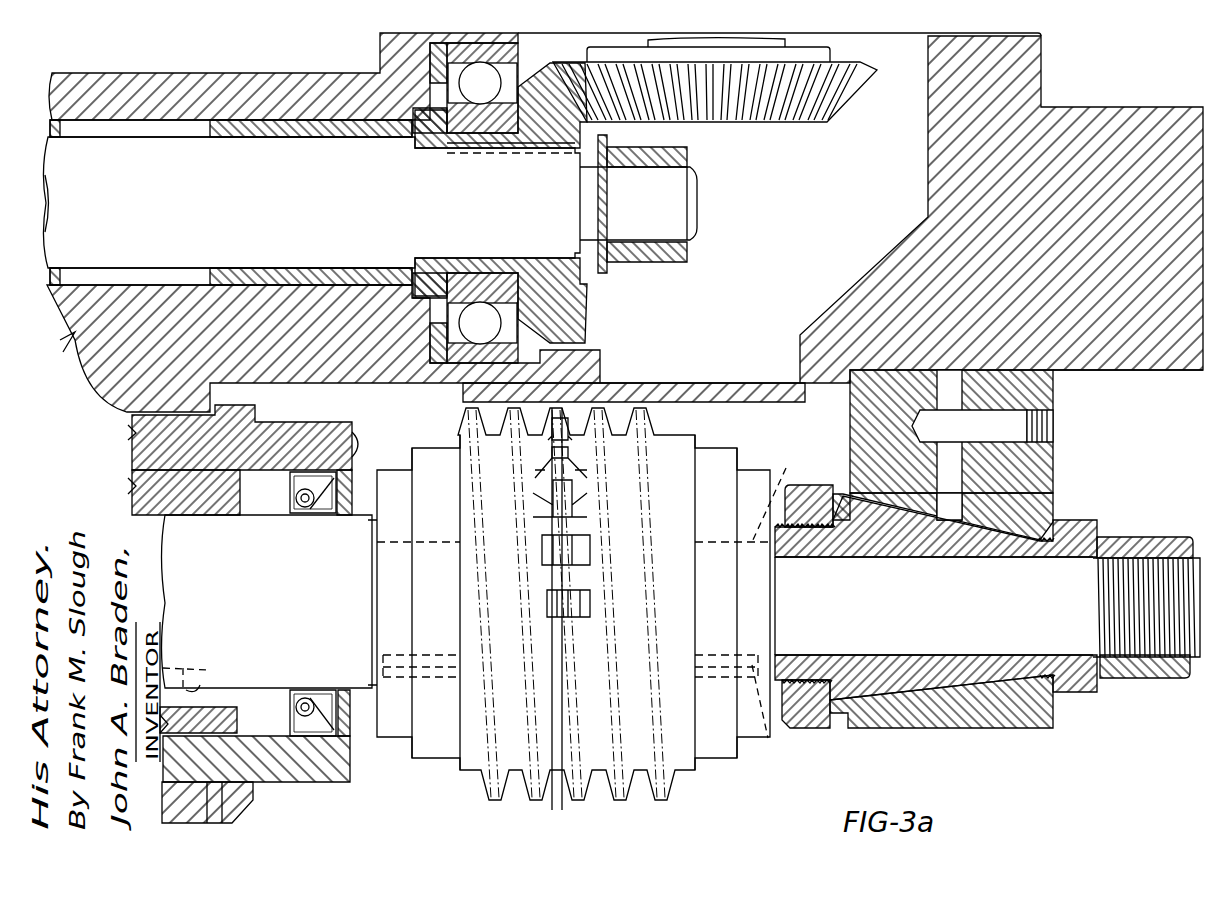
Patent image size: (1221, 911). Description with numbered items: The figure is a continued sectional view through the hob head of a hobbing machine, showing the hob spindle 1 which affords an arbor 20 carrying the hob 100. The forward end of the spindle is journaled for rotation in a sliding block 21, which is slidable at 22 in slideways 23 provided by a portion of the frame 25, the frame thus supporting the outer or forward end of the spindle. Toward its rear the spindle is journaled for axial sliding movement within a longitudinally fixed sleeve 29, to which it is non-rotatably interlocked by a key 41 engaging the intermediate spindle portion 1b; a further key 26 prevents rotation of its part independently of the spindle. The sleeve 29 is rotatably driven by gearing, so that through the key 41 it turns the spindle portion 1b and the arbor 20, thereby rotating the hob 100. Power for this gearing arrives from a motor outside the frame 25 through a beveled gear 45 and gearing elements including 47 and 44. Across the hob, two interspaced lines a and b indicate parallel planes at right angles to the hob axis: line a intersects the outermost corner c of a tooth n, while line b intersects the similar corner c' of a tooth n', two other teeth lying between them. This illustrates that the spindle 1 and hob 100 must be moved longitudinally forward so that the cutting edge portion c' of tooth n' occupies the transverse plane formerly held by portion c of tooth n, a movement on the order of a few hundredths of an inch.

The hob spindle 1 is at (336, 586).
The intermediate spindle portion 1b is at (208, 644).
The arbor 20 is at (776, 482).
The sliding block 21 is at (1037, 490).
The slidable portion of sliding block 22 is at (1053, 373).
The slideways 23 is at (1150, 372).
The frame 25 is at (271, 75).
The key 26 is at (768, 738).
The sleeve 29 is at (136, 513).
The key 41 is at (210, 670).
The gearing element 44 is at (546, 79).
The beveled gear 45 is at (750, 120).
The gearing element 47 is at (276, 210).
The hob 100 is at (650, 421).
The line a is at (562, 810).
The line b is at (552, 810).
The hob tooth n is at (602, 522).
The hob tooth n' is at (589, 439).
The outermost corner of tooth c is at (607, 588).
The corner of tooth c' is at (539, 459).